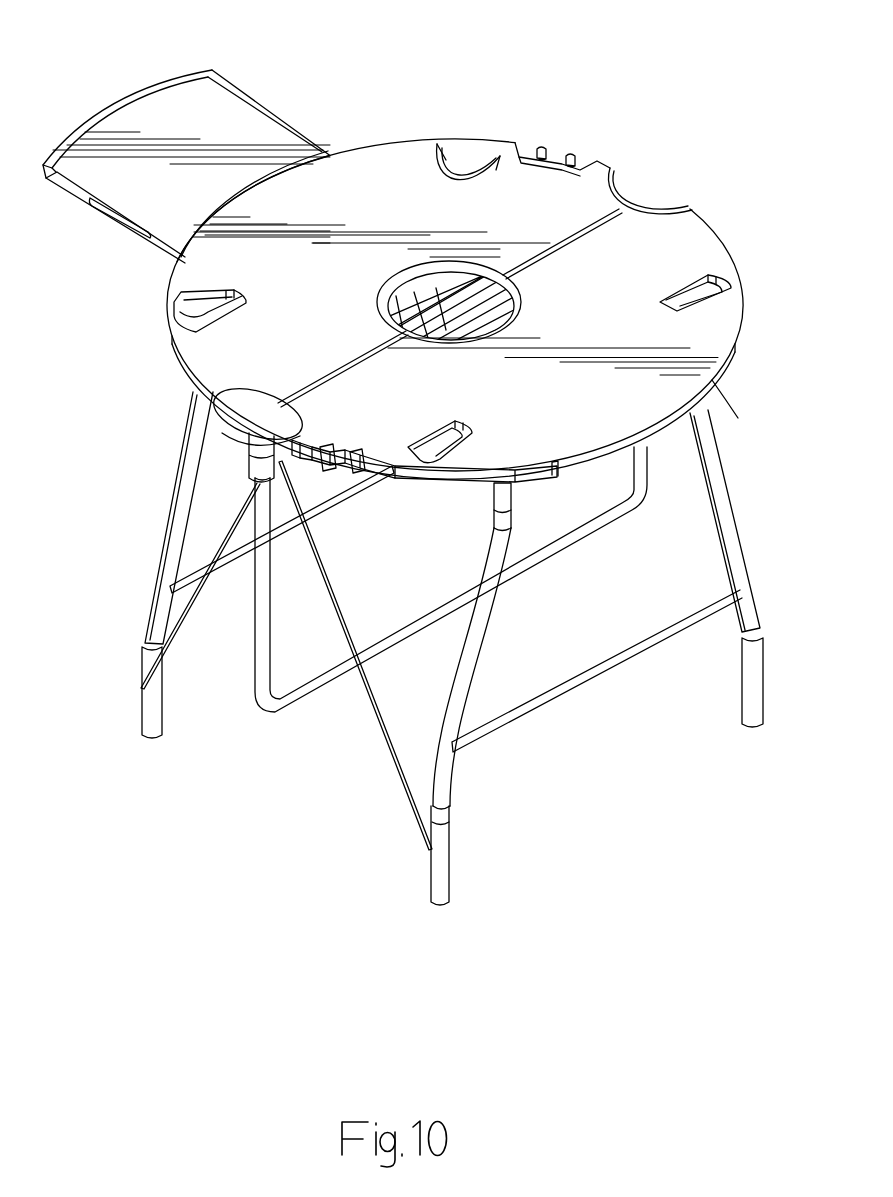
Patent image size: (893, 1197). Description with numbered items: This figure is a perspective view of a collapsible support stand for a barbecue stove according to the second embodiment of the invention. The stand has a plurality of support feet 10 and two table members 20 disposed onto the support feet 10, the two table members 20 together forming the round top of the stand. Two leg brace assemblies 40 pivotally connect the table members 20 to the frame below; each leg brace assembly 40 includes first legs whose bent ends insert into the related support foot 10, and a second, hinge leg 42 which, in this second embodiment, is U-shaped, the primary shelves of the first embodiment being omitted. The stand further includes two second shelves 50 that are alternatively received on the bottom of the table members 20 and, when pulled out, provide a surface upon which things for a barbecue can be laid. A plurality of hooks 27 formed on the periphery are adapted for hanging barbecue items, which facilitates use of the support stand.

The support foot 10 is at (457, 790).
The table member 20 is at (407, 163).
The hook 27 is at (544, 147).
The leg brace assembly 40 is at (221, 832).
The second, hinge leg 42 is at (303, 690).
The second shelf 50 is at (243, 123).